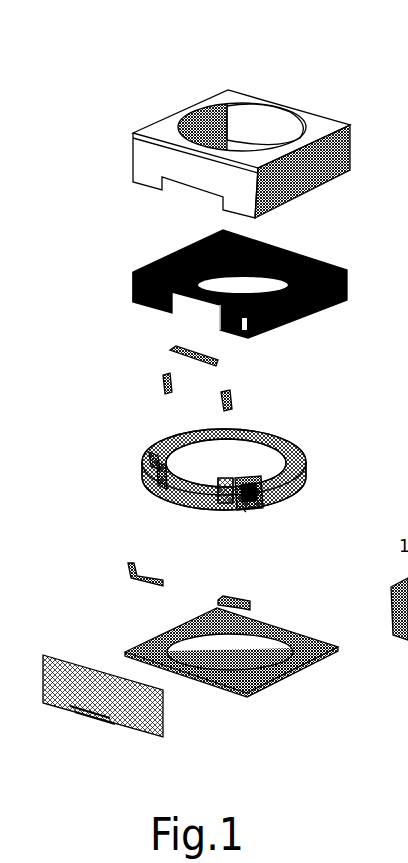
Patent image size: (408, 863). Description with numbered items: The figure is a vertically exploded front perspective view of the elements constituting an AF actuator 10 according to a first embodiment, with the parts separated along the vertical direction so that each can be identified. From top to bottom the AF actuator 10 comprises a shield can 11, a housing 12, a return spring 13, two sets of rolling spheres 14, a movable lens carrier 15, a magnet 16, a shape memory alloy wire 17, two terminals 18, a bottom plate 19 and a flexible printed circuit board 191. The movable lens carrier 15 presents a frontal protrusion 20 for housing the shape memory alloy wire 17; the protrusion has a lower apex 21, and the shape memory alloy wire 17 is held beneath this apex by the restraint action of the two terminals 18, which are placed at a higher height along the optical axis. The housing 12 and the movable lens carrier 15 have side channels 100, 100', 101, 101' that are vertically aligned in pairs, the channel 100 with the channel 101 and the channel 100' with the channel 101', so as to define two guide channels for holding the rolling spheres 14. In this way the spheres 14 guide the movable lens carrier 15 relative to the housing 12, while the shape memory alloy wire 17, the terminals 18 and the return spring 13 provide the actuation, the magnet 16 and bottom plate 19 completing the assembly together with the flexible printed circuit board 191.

The AF actuator 10 is at (85, 70).
The shield can 11 is at (321, 118).
The housing 12 is at (152, 262).
The side channel 100 is at (117, 303).
The side channel 100' is at (160, 332).
The return spring 13 is at (225, 357).
The rolling spheres 14 is at (228, 405).
The movable lens carrier 15 is at (309, 426).
The side channel 101 is at (124, 453).
The side channel 101' is at (213, 530).
The frontal protrusion 20 is at (158, 486).
The lower apex 21 is at (183, 500).
The magnet 16 is at (290, 496).
The shape memory alloy wire 17 is at (133, 546).
The terminals 18 is at (140, 566).
The bottom plate 19 is at (316, 638).
The Flexible Printed Circuit board 191 is at (154, 738).